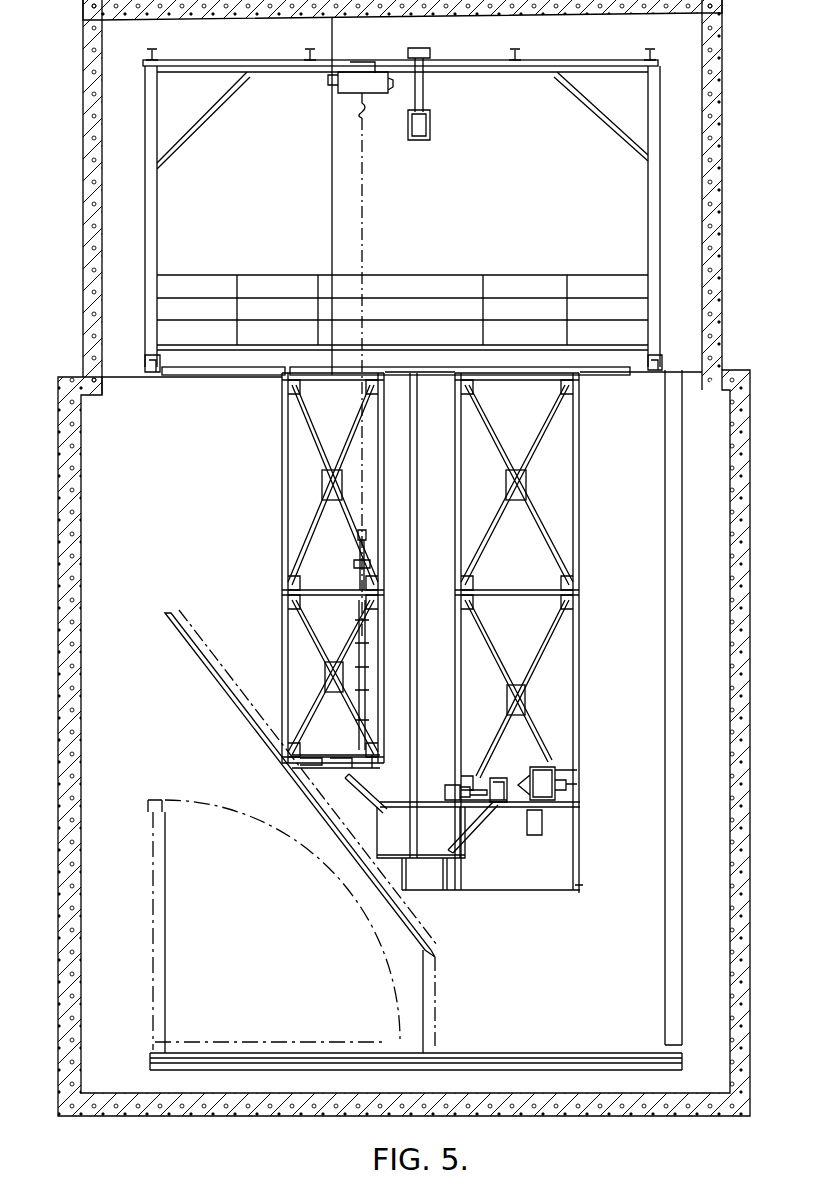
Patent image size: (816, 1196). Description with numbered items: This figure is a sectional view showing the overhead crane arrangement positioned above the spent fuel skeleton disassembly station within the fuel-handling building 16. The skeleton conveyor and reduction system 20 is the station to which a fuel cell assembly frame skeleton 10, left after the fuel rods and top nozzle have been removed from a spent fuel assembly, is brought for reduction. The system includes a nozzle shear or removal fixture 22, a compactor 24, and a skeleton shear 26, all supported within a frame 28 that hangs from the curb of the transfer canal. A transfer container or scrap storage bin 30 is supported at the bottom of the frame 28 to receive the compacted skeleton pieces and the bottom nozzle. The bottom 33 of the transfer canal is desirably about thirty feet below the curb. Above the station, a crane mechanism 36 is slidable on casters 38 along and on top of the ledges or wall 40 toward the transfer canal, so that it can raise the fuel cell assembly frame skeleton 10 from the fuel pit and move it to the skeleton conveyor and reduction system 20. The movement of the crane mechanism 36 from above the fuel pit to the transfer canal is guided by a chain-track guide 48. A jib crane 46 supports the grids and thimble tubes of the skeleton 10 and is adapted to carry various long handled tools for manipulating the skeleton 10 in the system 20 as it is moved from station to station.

The fuel cell assembly frame skeleton 10 is at (366, 545).
The fuel-handling building 16 is at (57, 535).
The skeleton conveyor and reduction system 20 is at (583, 525).
The nozzle shear or removal fixture 22 is at (345, 768).
The compactor 24 is at (548, 767).
The skeleton shear 26 is at (495, 785).
The frame 28 is at (579, 665).
The transfer container or scrap storage bin 30 is at (433, 880).
The bottom of transfer canal 33 is at (535, 1053).
The crane mechanism 36 is at (660, 142).
The casters 38 is at (656, 365).
The ledges or wall 40 is at (124, 372).
The jib crane 46 is at (338, 86).
The chain-track guide 48 is at (430, 99).